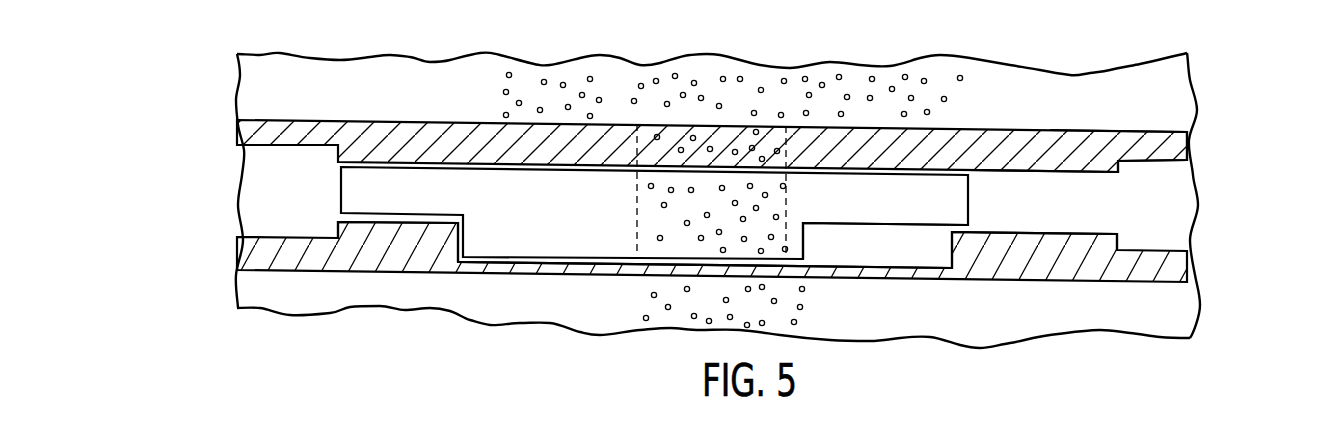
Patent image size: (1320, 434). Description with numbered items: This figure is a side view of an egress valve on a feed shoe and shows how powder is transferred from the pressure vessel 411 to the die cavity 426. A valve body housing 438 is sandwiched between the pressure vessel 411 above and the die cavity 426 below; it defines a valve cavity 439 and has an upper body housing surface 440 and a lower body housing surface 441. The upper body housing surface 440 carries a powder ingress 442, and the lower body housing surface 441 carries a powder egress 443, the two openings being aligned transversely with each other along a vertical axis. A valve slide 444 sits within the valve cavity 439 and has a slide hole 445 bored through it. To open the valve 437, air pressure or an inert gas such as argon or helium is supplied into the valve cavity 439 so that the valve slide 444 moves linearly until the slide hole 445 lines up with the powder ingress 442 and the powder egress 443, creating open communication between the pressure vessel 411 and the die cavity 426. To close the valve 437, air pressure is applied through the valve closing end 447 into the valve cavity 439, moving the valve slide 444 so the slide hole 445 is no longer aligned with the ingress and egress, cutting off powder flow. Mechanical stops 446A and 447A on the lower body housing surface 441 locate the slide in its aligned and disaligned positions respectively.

The pressure vessel 411 is at (266, 80).
The die cavity 426 is at (260, 287).
The valve 437 is at (637, 220).
The valve body housing 438 is at (1078, 143).
The valve cavity 439 is at (1034, 190).
The upper body housing surface 440 is at (980, 147).
The lower body housing surface 441 is at (1173, 202).
The powder ingress 442 is at (790, 80).
The powder egress 443 is at (737, 282).
The valve slide 444 is at (533, 240).
The slide hole 445 is at (700, 235).
The mechanical stop 446A is at (407, 246).
The valve closing end 447 is at (253, 163).
The mechanical stop 447A is at (1070, 246).